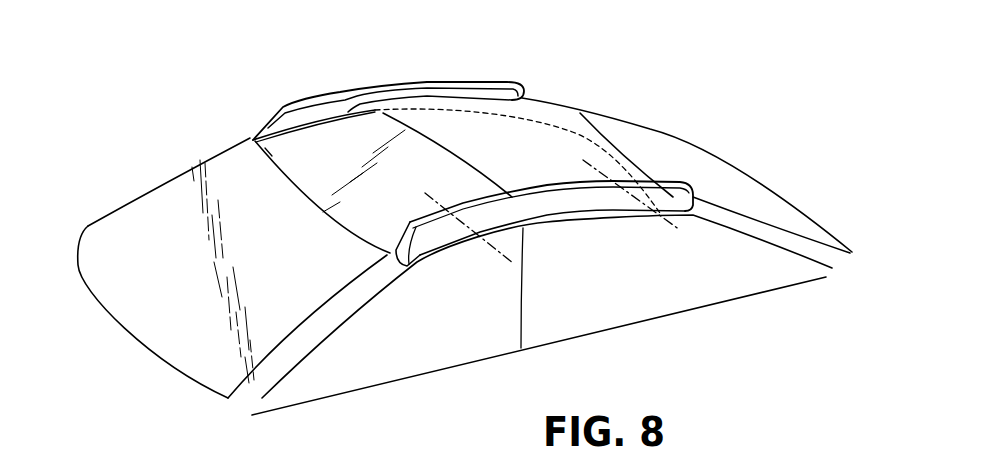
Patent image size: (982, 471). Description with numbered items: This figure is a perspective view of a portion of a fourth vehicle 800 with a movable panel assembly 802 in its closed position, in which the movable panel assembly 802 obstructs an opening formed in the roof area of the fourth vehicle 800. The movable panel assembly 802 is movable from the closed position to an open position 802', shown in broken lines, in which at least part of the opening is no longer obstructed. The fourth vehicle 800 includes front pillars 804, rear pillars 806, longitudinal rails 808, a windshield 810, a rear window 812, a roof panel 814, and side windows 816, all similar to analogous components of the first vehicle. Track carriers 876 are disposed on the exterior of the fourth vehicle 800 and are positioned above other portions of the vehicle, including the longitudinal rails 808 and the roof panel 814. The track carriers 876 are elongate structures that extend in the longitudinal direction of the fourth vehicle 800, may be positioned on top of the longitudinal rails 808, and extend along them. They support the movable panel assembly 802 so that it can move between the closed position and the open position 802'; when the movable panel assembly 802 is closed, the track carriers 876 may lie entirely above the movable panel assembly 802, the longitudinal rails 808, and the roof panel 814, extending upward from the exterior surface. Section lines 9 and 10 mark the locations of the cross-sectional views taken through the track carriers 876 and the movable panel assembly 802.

The fourth vehicle 800 is at (169, 141).
The movable panel assembly 802 is at (361, 115).
The open position 802' is at (517, 130).
The front pillars 804 is at (137, 193).
The rear pillars 806 is at (647, 132).
The longitudinal rails 808 is at (530, 100).
The windshield 810 is at (157, 343).
The rear window 812 is at (720, 180).
The roof panel 814 is at (580, 115).
The side windows 816 is at (383, 374).
The track carriers 876 is at (343, 88).
The section line 9- 9 is at (425, 193).
The section line 10- 10 is at (583, 160).